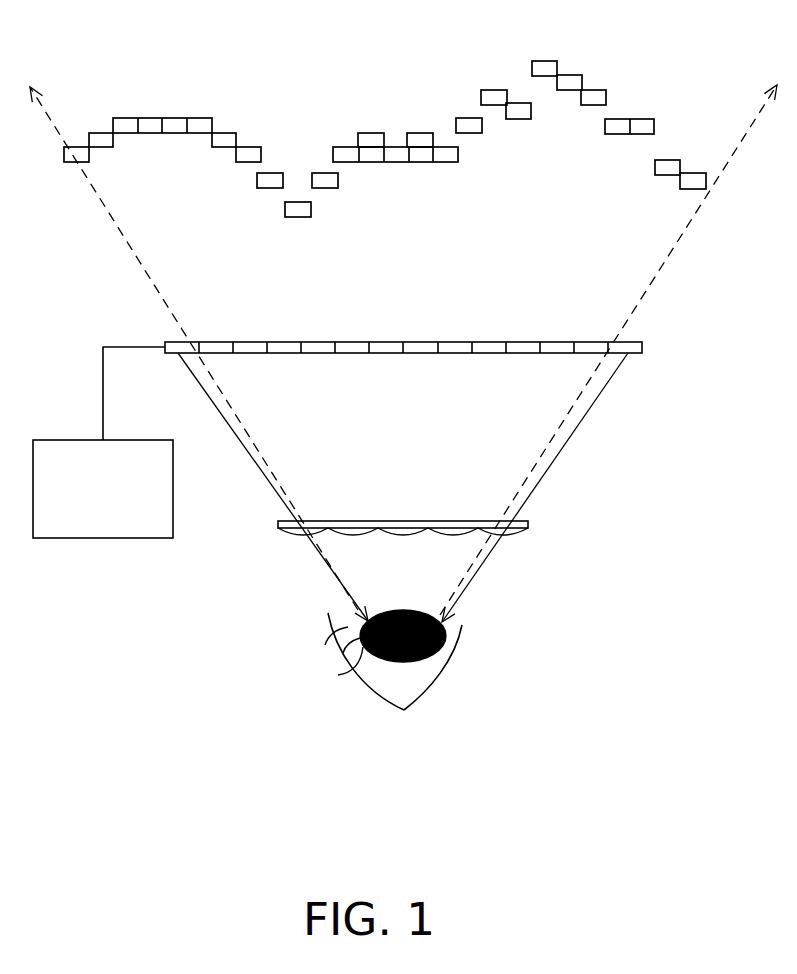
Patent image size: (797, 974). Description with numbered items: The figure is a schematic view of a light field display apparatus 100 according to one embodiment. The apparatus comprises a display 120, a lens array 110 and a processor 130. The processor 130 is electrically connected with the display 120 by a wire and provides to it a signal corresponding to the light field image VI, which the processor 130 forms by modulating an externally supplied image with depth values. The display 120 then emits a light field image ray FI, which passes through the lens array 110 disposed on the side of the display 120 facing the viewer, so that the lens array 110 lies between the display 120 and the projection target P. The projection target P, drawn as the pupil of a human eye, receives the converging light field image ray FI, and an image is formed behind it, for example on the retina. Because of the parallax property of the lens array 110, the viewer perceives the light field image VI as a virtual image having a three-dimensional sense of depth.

The light field display apparatus 100 is at (771, 778).
The lens array 110 is at (529, 524).
The display 120 is at (643, 347).
The processor 130 is at (100, 542).
The light field image VI is at (645, 75).
The light field image ray FI is at (578, 422).
The projection target P is at (448, 608).